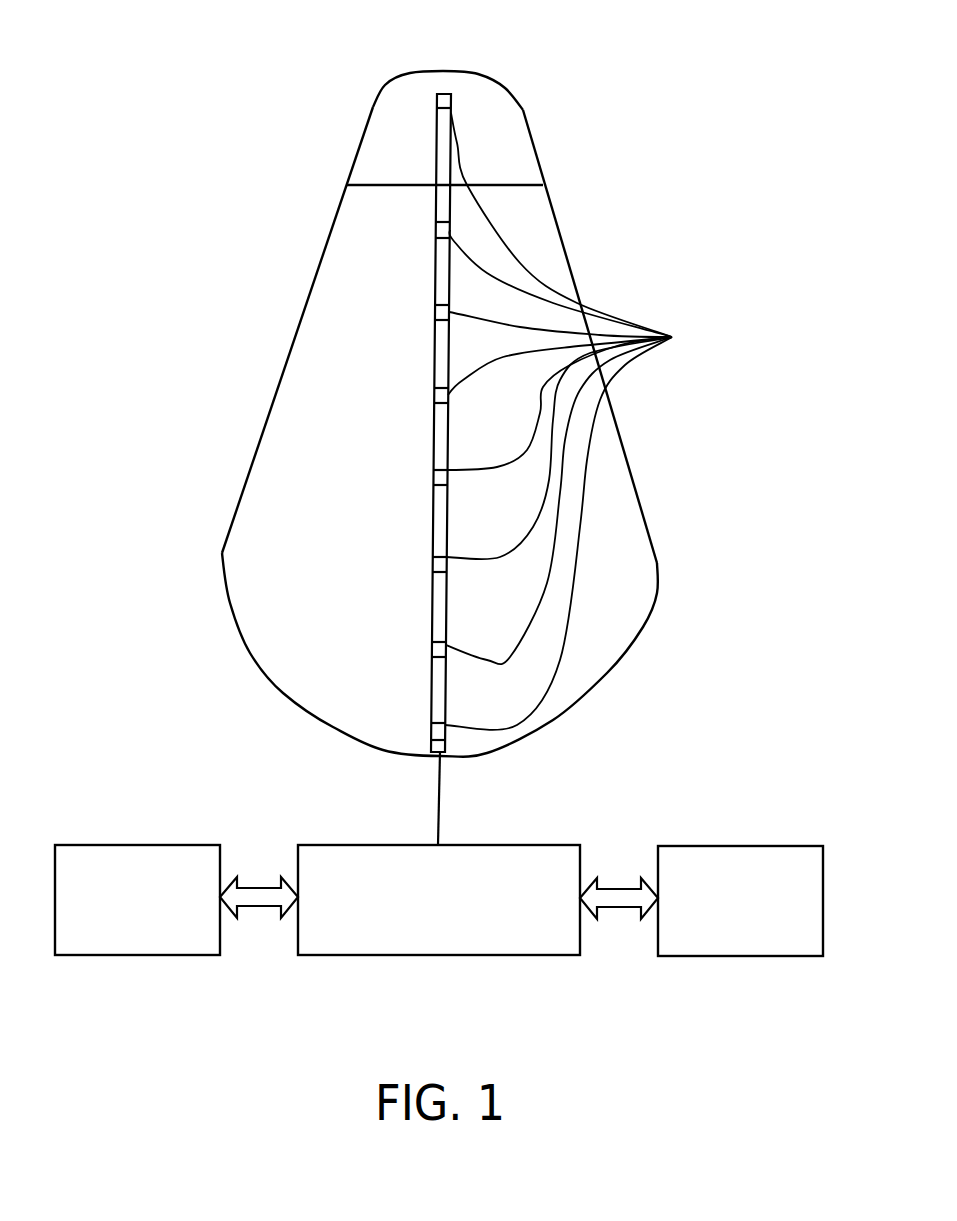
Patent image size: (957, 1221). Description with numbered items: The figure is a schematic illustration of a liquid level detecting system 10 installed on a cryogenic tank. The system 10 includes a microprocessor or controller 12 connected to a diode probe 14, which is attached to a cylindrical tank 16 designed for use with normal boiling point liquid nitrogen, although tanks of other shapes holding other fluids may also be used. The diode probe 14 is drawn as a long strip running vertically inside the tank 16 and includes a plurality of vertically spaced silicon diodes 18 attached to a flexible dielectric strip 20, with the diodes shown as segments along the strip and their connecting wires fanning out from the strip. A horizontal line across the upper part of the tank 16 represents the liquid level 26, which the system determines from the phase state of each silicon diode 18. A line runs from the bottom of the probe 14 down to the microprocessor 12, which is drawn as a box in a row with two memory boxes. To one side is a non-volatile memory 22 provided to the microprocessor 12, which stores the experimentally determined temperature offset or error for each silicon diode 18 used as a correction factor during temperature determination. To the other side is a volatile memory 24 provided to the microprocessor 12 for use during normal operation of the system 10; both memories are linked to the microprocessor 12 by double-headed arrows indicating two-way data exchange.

The liquid level detecting system 10 is at (729, 705).
The microprocessor 12 is at (437, 955).
The diode probe 14 is at (457, 72).
The cylindrical tank 16 is at (374, 107).
The silicon diodes 18 is at (672, 337).
The flexible dielectric strip 20 is at (431, 752).
The non-volatile memory 22 is at (138, 955).
The volatile memory 24 is at (740, 957).
The liquid level 26 is at (398, 185).